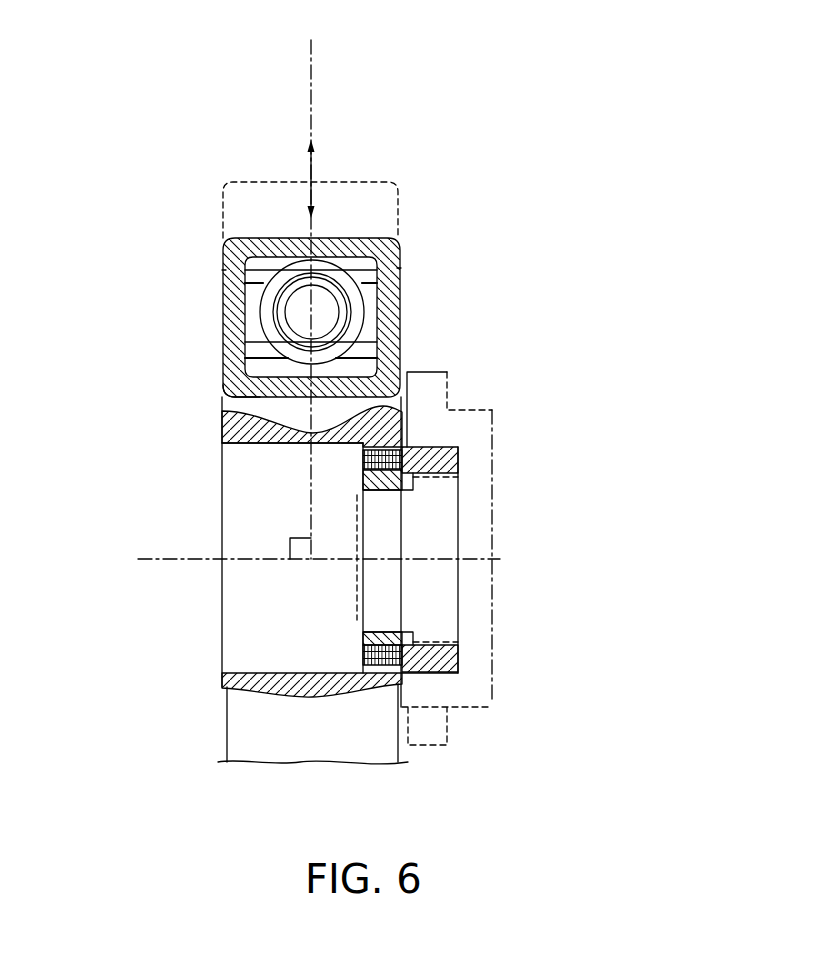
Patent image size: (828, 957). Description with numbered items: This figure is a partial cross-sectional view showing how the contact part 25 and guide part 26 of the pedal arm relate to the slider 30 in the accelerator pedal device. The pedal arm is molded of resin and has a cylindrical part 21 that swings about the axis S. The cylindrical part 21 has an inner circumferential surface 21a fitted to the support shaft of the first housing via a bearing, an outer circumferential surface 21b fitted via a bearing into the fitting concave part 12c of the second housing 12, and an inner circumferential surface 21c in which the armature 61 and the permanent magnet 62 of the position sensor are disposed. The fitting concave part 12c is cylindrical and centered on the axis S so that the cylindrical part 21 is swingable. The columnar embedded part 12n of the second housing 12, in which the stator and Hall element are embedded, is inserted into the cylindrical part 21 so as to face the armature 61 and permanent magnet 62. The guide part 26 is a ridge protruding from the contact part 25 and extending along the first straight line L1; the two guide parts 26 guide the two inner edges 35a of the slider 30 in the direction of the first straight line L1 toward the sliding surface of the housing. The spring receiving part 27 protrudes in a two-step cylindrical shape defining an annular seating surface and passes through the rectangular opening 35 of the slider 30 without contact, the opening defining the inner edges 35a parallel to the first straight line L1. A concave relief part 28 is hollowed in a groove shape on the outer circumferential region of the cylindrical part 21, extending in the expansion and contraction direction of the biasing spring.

The first straight line L1 is at (311, 58).
The axis S is at (162, 558).
The slider 30 is at (316, 252).
The spring receiving part 27 is at (400, 235).
The guide part 26 is at (400, 268).
The rectangular opening 35 is at (370, 362).
The inner edges 35a is at (247, 327).
The contact part 25 is at (226, 394).
The concave relief part 28 is at (262, 418).
The cylindrical part 21 is at (344, 580).
The inner circumferential surface 21a is at (252, 452).
The outer circumferential surface 21b is at (450, 676).
The inner circumferential surface 21c is at (270, 658).
The second housing 12 is at (380, 548).
The fitting concave part 12c is at (459, 459).
The armature 61 is at (460, 465).
The permanent magnet 62 is at (413, 483).
The embedded part 12n is at (357, 598).